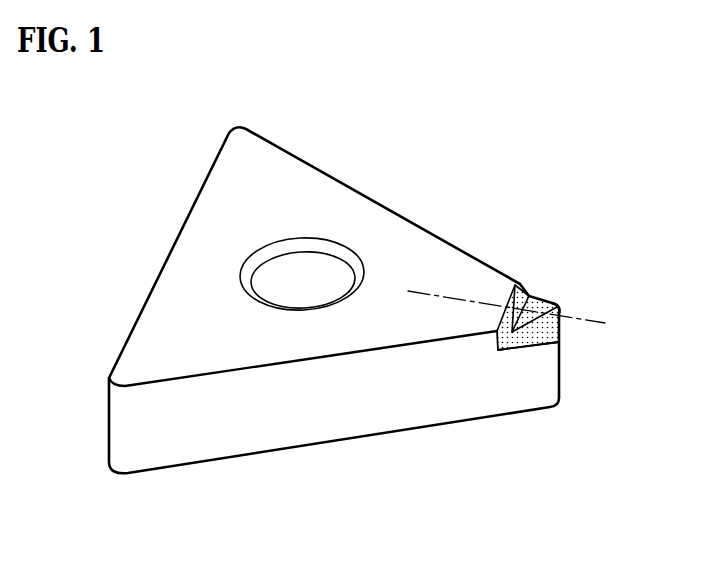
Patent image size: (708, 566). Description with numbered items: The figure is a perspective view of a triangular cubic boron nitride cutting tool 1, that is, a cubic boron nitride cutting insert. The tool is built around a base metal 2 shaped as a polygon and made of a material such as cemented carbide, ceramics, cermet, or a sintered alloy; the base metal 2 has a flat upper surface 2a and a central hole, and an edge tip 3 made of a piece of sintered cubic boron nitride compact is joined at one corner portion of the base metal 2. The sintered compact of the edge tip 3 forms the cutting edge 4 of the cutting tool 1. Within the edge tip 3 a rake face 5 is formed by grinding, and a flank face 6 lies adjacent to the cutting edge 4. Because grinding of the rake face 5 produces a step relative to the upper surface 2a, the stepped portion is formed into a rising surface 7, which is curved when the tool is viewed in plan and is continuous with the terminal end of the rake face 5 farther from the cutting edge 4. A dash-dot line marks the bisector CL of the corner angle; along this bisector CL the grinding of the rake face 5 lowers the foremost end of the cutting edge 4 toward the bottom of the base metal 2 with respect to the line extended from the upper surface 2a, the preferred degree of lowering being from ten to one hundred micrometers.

The cubic boron nitride cutting tool 1 is at (361, 315).
The base metal 2 is at (377, 413).
The upper surface 2a is at (178, 270).
The edge tip 3 is at (552, 297).
The cutting edge 4 is at (560, 338).
The rake face 5 is at (560, 312).
The flank face 6 is at (528, 342).
The rising surface 7 is at (533, 297).
The bisector of the corner angle CL is at (526, 315).